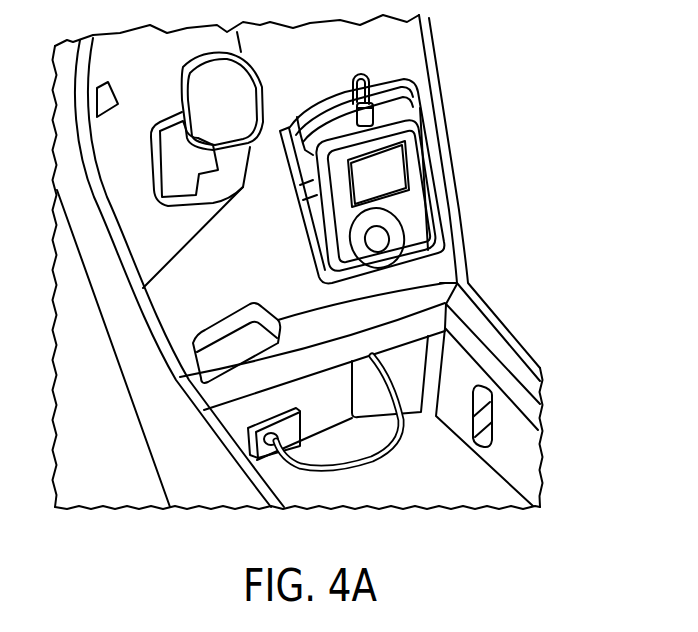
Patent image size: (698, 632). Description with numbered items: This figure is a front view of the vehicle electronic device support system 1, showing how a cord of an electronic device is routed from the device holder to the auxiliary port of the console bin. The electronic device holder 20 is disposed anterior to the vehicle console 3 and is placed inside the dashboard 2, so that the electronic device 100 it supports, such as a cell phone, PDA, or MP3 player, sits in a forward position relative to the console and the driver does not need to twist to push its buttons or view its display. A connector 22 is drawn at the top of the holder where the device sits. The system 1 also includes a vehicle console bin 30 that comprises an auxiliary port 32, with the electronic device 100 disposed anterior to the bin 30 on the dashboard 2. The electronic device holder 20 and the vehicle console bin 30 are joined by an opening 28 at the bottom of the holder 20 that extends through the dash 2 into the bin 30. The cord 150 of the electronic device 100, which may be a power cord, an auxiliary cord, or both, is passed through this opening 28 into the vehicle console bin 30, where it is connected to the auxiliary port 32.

The vehicle electronic device support system 1 is at (565, 189).
The dashboard 2 is at (135, 341).
The vehicle console 3 is at (213, 453).
The electronic device holder 20 is at (440, 174).
The connector cable loop 22 is at (412, 73).
The opening 28 is at (405, 399).
The vehicle console bin 30 is at (531, 462).
The auxiliary port 32 is at (296, 434).
The electronic device 100 is at (413, 142).
The cord 150 is at (390, 445).